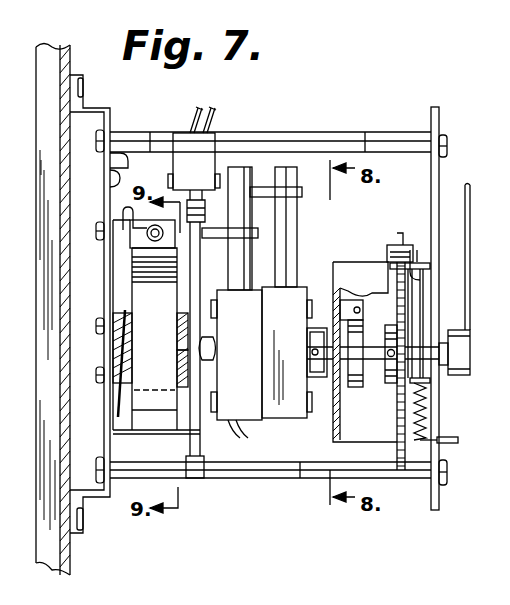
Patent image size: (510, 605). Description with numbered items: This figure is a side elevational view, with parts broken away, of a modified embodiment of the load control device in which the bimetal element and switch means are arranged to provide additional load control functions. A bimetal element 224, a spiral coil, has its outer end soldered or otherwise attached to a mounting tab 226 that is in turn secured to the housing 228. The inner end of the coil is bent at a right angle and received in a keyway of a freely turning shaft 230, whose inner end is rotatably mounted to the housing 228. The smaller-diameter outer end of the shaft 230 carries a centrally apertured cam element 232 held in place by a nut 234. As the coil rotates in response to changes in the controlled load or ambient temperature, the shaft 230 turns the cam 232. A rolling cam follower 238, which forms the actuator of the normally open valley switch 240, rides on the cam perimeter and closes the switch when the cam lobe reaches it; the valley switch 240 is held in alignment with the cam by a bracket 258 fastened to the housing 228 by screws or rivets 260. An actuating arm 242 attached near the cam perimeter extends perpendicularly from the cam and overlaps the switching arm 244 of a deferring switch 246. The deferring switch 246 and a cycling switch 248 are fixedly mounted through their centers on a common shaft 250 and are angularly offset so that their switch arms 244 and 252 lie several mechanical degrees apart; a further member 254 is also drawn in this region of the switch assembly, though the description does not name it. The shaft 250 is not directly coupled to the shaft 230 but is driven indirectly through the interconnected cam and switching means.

The bimetal element 224 is at (160, 422).
The mounting tab 226 is at (127, 240).
The housing 228 is at (110, 120).
The shaft 230 is at (177, 344).
The cam element 232 is at (203, 441).
The nut 234 is at (213, 348).
The cam follower 238 is at (194, 177).
The valley switch 240 is at (192, 130).
The actuating arm 242 is at (242, 233).
The switching arm 244 is at (243, 275).
The deferring switch 246 is at (236, 364).
The cycling switch 248 is at (287, 352).
The common shaft 250 is at (337, 386).
The switch arm 252 is at (297, 230).
The cross bar 254 is at (293, 196).
The bracket 258 is at (125, 155).
The screws or rivets 260 is at (110, 176).